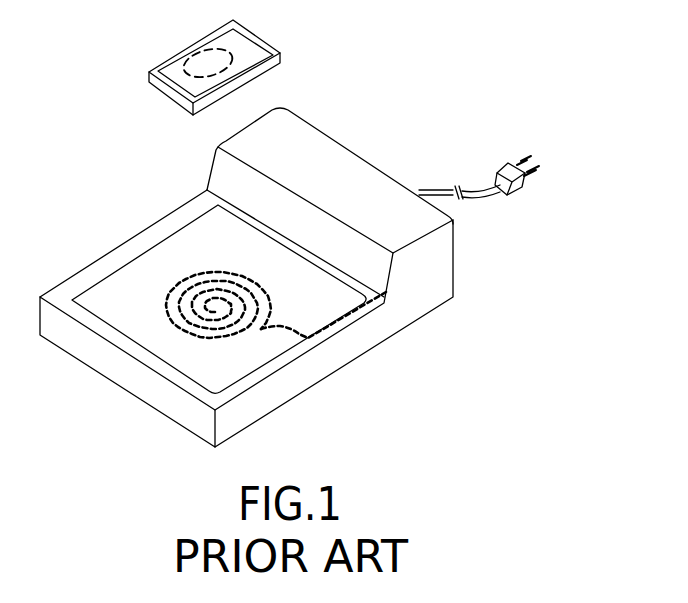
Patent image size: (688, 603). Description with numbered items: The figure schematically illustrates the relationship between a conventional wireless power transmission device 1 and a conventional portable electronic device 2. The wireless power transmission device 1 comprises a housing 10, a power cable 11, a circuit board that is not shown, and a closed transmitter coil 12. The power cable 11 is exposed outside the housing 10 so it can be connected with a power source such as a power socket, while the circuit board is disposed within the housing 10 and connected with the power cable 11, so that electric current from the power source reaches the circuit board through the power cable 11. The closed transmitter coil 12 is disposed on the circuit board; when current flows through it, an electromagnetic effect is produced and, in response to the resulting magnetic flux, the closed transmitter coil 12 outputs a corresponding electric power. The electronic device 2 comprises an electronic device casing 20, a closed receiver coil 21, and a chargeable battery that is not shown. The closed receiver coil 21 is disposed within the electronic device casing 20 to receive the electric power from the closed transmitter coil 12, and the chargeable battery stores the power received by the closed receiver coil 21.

The wireless power transmission device 1 is at (148, 220).
The housing 10 is at (102, 265).
The power cable 11 is at (490, 199).
The closed transmitter coil 12 is at (167, 325).
The electronic device 2 is at (198, 57).
The electronic device casing 20 is at (158, 65).
The closed receiver coil 21 is at (225, 55).